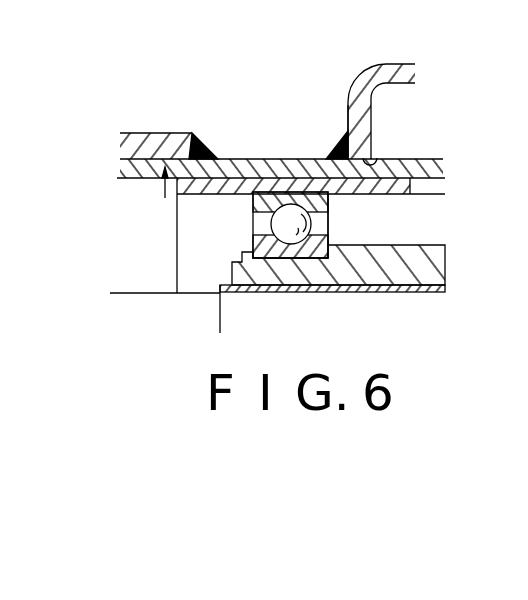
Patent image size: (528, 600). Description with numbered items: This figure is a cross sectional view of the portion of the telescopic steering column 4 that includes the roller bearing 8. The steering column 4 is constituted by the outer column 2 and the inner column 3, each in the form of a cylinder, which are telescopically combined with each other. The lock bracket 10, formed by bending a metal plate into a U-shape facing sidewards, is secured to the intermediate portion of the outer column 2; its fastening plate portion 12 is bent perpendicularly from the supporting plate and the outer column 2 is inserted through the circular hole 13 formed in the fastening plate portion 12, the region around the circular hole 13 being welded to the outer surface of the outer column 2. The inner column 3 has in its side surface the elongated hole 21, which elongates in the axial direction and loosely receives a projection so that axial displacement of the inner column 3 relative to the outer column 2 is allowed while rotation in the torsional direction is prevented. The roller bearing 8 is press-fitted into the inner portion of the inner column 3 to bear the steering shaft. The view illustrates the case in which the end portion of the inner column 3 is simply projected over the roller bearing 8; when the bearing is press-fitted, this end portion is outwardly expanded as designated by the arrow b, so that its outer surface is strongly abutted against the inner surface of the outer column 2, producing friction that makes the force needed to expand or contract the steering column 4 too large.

The outer column 2 is at (235, 166).
The inner column 3 is at (362, 182).
The steering column 4 is at (428, 163).
The roller bearing 8 is at (290, 193).
The lock bracket 10 is at (373, 70).
The fastening plate portion 12 is at (348, 103).
The circular hole 13 is at (372, 162).
The elongated hole 21 is at (437, 180).
The arrow b is at (162, 196).